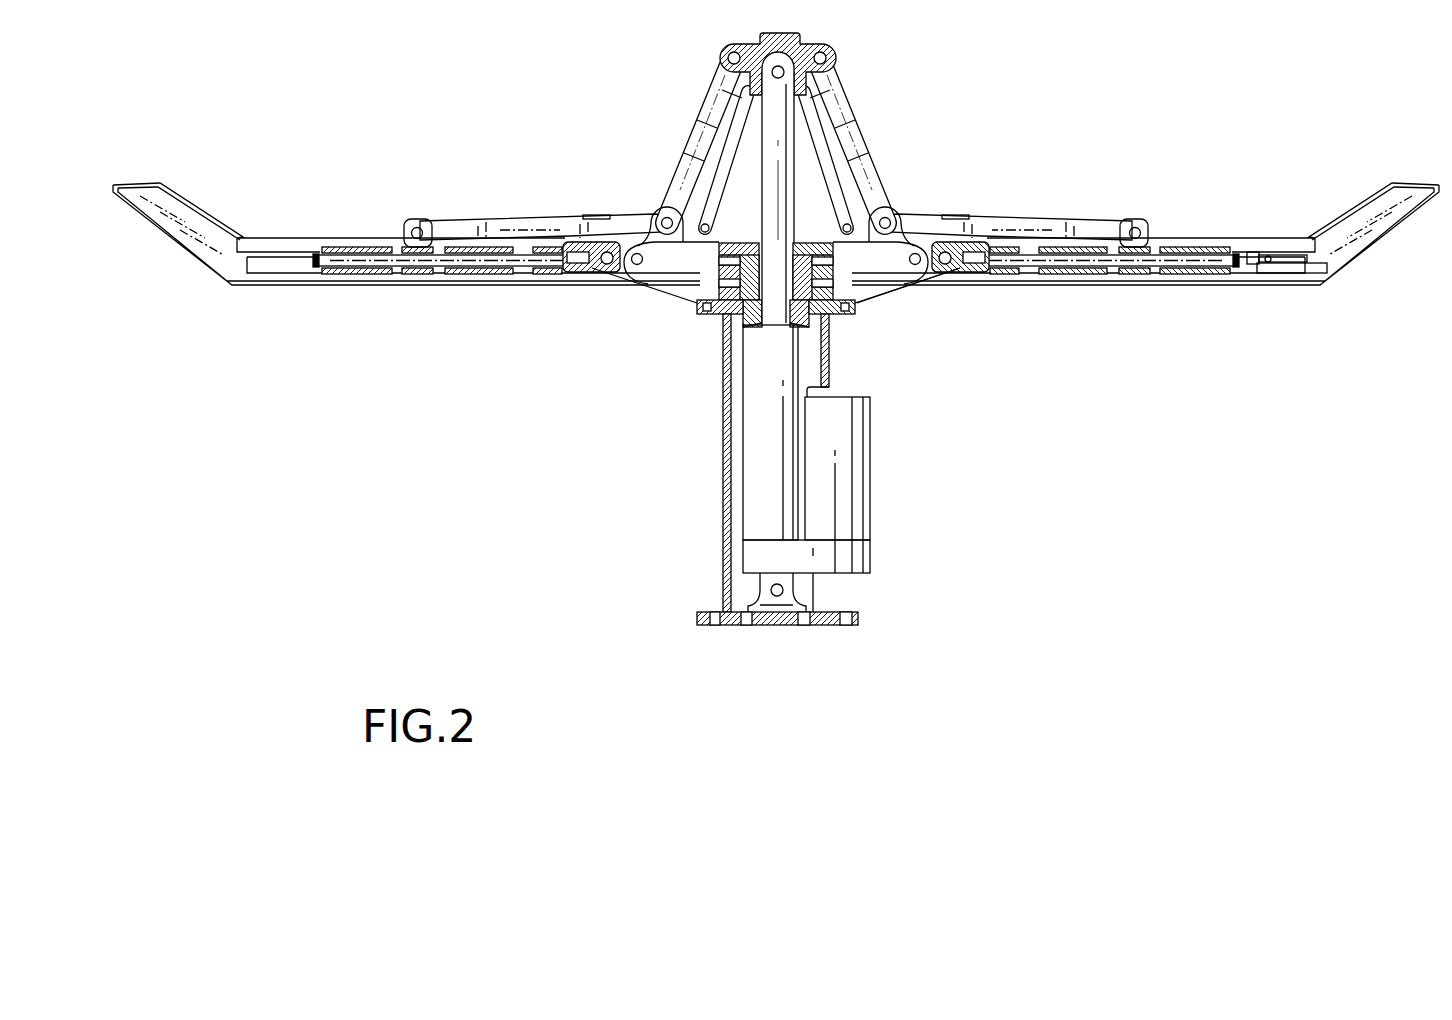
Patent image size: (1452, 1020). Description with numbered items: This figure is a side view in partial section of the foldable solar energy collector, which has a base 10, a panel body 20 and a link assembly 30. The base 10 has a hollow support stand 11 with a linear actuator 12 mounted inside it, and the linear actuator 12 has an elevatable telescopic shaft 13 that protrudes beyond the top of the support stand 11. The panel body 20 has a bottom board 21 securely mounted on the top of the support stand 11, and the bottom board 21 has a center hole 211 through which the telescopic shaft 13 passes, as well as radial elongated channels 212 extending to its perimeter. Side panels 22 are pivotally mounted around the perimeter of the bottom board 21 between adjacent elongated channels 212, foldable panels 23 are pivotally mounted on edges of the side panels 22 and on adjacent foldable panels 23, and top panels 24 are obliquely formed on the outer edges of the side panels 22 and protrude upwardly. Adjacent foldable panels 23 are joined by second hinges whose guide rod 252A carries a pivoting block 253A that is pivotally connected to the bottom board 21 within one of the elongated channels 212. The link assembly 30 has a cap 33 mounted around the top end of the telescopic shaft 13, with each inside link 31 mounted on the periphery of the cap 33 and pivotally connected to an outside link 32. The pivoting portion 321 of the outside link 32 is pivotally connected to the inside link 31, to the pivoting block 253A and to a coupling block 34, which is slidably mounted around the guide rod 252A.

The base 10 is at (782, 469).
The support stand 11 is at (738, 380).
The linear actuator 12 is at (858, 475).
The telescopic shaft 13 is at (787, 163).
The panel body 20 is at (308, 205).
The bottom board 21 is at (843, 227).
The center hole 211 is at (765, 236).
The elongated channel 212 is at (883, 280).
The side panel 22 is at (1018, 272).
The foldable panel 23 is at (1250, 248).
The top panel 24 is at (1390, 198).
The guide rod 252A is at (445, 258).
The pivoting block 253A is at (588, 273).
The link assembly 30 is at (855, 53).
The inside link 31 is at (713, 107).
The outside link 32 is at (527, 228).
The pivoting portion 321 is at (653, 270).
The cap 33 is at (753, 50).
The coupling block 34 is at (400, 225).